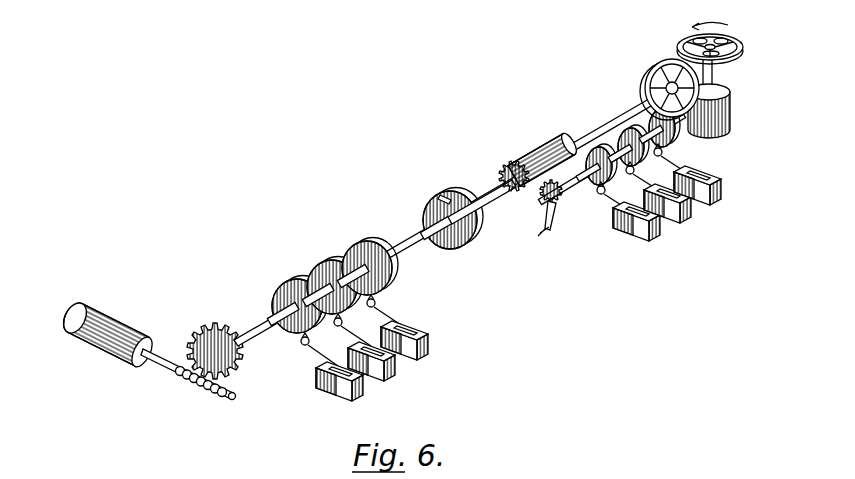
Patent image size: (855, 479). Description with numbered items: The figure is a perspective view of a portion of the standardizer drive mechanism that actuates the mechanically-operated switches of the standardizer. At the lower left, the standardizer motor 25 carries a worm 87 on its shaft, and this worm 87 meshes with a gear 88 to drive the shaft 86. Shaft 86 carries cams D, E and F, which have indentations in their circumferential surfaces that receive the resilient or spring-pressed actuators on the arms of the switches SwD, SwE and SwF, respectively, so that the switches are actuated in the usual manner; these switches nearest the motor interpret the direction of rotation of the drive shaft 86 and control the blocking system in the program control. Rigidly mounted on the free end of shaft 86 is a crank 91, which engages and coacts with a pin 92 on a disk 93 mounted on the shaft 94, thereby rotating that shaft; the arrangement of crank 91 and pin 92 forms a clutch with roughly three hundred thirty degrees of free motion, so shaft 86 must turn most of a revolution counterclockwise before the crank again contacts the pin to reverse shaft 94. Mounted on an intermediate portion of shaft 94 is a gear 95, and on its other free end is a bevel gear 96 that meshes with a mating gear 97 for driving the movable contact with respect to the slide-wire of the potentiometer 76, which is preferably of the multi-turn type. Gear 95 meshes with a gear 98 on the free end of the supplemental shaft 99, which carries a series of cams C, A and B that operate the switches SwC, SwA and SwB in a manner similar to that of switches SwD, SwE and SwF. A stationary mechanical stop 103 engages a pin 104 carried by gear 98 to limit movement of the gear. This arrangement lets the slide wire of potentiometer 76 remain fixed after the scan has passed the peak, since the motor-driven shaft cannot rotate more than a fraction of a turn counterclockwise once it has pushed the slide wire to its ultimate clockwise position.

The standardizer motor 25 is at (97, 307).
The worm 87 is at (213, 393).
The gear 88 is at (207, 326).
The shaft 86 is at (403, 242).
The cam D is at (282, 282).
The cam E is at (313, 266).
The cam F is at (348, 244).
The crank 91 is at (440, 215).
The pin 92 is at (442, 200).
The disk 93 is at (455, 247).
The shaft 94 is at (487, 183).
The gear 95 is at (540, 148).
The supplemental shaft 99 is at (578, 186).
The pin 104 is at (543, 202).
The gear 98 is at (558, 202).
The stationary mechanical stop 103 is at (557, 224).
The cam C is at (587, 150).
The cam A is at (617, 132).
The cam B is at (640, 112).
The mechanically-operated switch SwD is at (350, 372).
The mechanically-operated switch SwE is at (381, 353).
The mechanically-operated switch SwF is at (413, 333).
The mechanically-operated switch SwC is at (647, 216).
The mechanically-operated switch SwA is at (675, 197).
The mechanically-operated switch SwB is at (704, 178).
The slide-wire potentiometer 76 is at (730, 107).
The bevel gear 96 is at (650, 67).
The mating gear 97 is at (742, 42).